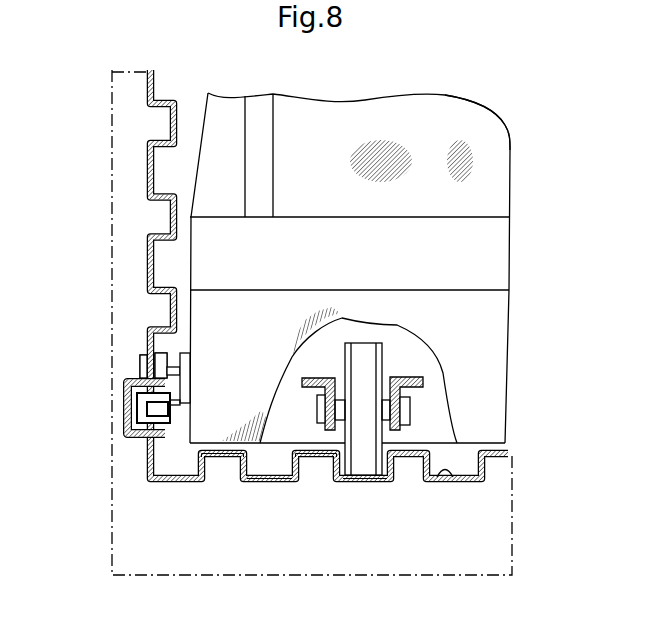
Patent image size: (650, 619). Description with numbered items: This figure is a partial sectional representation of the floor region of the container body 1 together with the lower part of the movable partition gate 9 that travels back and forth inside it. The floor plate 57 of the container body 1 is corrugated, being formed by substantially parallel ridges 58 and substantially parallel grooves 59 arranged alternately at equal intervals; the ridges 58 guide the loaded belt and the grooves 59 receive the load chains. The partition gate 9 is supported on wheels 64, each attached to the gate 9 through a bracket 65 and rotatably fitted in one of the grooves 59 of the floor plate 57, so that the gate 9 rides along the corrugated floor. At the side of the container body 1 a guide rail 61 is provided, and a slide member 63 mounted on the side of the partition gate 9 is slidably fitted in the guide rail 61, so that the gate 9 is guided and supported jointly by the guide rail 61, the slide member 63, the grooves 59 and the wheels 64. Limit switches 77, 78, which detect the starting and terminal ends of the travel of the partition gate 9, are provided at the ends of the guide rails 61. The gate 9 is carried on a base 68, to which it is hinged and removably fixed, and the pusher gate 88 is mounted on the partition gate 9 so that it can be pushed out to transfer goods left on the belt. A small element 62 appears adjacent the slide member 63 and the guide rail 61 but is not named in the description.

The container body 1 is at (112, 242).
The partition gate 9 is at (493, 194).
The pusher gate 88 is at (488, 123).
The base 68 is at (487, 337).
The wheel 64 is at (363, 370).
The bracket 65 is at (423, 382).
The floor plate 57 is at (508, 453).
The ridge 58 is at (225, 457).
The groove 59 is at (268, 474).
The guide rail 61 is at (132, 437).
The flange 62 is at (183, 380).
The slide member 63 is at (123, 400).
The limit switch 77 is at (160, 360).
The limit switch 78 is at (153, 365).